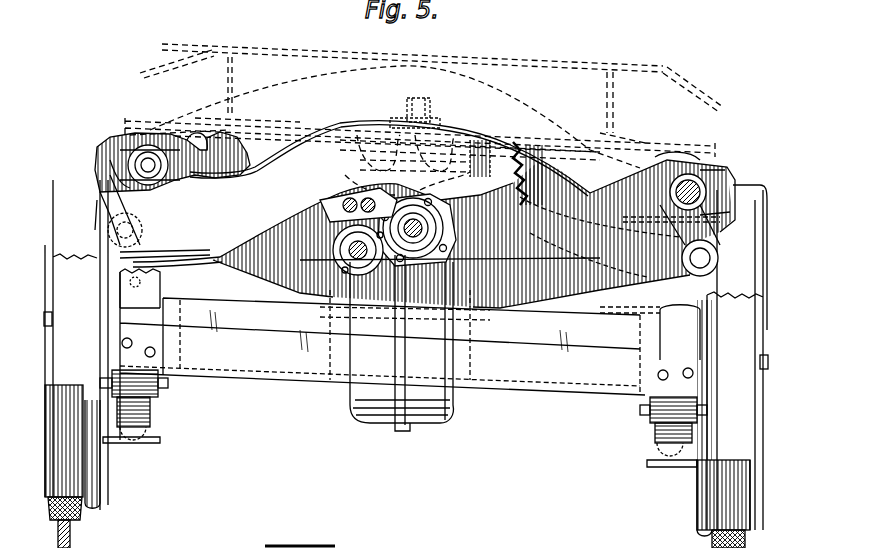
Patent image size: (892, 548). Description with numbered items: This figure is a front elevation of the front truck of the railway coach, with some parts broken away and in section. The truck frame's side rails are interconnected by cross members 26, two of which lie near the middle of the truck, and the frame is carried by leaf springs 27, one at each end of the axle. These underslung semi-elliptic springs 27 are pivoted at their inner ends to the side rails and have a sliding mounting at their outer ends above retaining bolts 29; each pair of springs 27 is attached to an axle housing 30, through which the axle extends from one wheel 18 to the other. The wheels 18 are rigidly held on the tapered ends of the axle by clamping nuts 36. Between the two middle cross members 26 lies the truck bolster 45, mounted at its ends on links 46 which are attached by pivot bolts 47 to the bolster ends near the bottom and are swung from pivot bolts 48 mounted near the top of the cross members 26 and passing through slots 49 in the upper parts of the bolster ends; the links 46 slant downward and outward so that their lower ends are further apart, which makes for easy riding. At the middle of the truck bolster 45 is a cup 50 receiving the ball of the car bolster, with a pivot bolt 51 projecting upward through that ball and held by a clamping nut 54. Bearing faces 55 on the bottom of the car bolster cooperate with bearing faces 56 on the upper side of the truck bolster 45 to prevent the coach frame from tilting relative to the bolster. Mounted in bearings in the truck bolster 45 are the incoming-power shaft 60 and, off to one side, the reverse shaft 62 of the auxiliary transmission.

The wheel 18 is at (103, 503).
The cross member 26 is at (252, 178).
The leaf spring 27 is at (150, 417).
The retaining bolt 29 is at (167, 393).
The axle housing 30 is at (383, 425).
The clamping nut 36 is at (48, 328).
The truck bolster 45 is at (580, 200).
The link 46 is at (102, 203).
The pivot bolt 47 is at (97, 240).
The pivot bolt 48 is at (58, 190).
The slot 49 is at (118, 158).
The cup 50 is at (457, 133).
The pivot bolt 51 is at (427, 102).
The clamping nut 54 is at (403, 107).
The bearing face 55 is at (149, 145).
The bearing face 56 is at (657, 158).
The incoming-power shaft 60 is at (420, 247).
The reverse shaft 62 is at (335, 266).